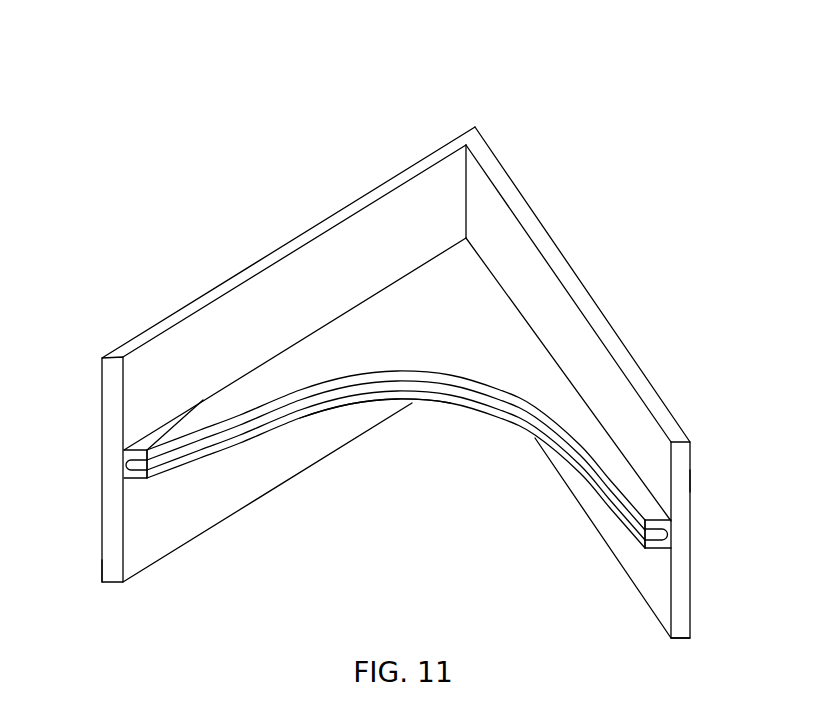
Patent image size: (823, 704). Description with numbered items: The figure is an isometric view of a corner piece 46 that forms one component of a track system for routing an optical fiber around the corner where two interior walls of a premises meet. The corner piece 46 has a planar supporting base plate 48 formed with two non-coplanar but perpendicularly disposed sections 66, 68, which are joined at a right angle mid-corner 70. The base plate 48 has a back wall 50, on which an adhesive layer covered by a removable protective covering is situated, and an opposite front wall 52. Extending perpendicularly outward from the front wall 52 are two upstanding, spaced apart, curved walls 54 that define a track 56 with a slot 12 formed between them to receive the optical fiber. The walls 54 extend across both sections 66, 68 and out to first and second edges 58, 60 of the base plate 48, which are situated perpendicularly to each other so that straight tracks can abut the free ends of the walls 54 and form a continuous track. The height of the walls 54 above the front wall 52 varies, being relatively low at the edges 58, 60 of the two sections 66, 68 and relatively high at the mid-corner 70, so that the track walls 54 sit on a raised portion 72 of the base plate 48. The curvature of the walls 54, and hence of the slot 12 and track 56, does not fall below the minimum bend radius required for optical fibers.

The corner piece 46 is at (168, 97).
The right angle mid-corner 70 is at (475, 127).
The first section of supporting base plate 66 is at (297, 237).
The second section of supporting base plate 68 is at (573, 264).
The raised portion 72 is at (385, 312).
The front wall 52 is at (130, 377).
The first edge 58 is at (108, 556).
The supporting base plate 48 is at (676, 400).
The back wall 50 is at (697, 480).
The second edge 60 is at (683, 596).
The slot 12 is at (230, 427).
The upstanding walls 54 is at (155, 440).
The track 56 is at (212, 455).